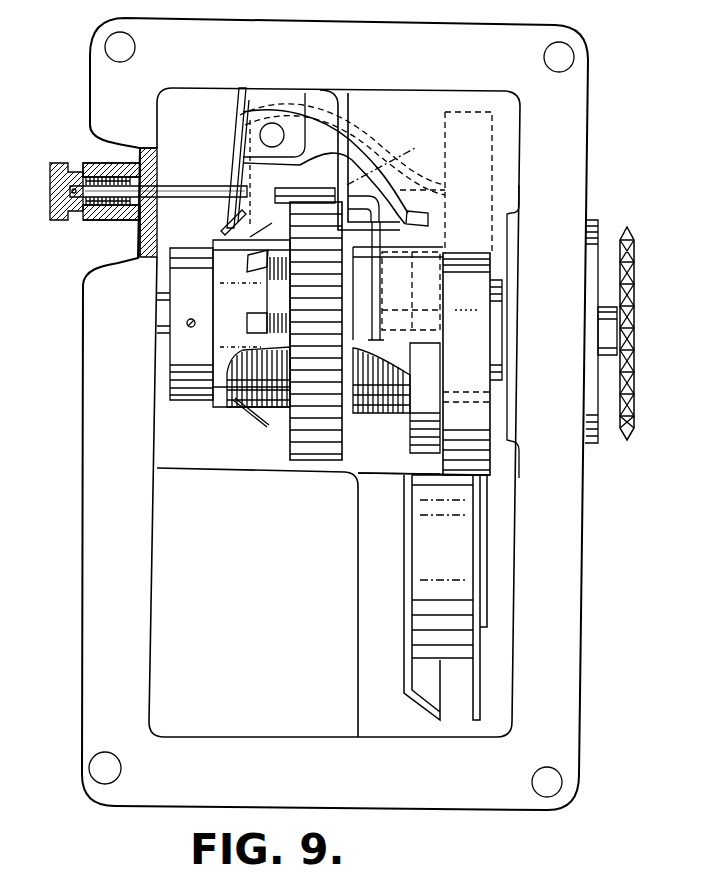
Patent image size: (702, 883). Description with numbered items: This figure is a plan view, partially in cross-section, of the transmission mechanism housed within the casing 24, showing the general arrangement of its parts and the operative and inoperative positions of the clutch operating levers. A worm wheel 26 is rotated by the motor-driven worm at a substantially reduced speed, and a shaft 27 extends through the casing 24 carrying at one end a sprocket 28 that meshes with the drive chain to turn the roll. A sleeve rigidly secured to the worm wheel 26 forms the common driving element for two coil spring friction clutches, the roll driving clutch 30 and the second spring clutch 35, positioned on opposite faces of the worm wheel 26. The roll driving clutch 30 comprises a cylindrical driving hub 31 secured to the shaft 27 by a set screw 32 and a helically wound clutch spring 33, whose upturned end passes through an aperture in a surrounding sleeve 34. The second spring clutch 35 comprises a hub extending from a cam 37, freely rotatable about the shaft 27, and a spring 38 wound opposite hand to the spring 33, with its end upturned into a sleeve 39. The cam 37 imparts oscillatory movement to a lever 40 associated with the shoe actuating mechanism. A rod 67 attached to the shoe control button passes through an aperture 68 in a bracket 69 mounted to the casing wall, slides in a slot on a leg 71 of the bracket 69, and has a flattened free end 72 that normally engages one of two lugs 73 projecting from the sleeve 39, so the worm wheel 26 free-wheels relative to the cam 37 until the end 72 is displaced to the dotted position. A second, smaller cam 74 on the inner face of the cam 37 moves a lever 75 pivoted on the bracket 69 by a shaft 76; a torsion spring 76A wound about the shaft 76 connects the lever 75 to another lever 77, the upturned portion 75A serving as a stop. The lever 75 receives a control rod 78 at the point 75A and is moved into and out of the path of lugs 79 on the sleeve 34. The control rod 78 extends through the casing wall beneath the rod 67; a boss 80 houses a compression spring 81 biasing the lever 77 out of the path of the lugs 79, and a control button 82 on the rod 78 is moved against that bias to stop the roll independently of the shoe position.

The casing 24 is at (582, 524).
The worm wheel 26 is at (292, 428).
The shaft 27 is at (612, 332).
The sprocket 28 is at (629, 287).
The roll driving clutch 30 is at (234, 441).
The cylindrical driving hub 31 is at (184, 256).
The set screw 32 is at (203, 304).
The clutch spring 33 is at (246, 394).
The sleeve 34 is at (220, 384).
The second spring clutch 35 is at (374, 440).
The cam 37 is at (468, 261).
The spring 38 is at (387, 407).
The sleeve 39 is at (438, 323).
The lever 40 is at (408, 505).
The rod 67 is at (303, 192).
The aperture 68 is at (383, 162).
The bracket 69 is at (349, 100).
The leg 71 is at (400, 234).
The free end 72 is at (405, 352).
The lugs 73 is at (380, 323).
The second cam 74 is at (428, 384).
The lever 75 is at (383, 184).
The upturned portion 75A is at (225, 226).
The shaft 76 is at (261, 130).
The torsion spring 76A is at (230, 180).
The lever 77 is at (233, 164).
The control rod 78 is at (167, 192).
The lugs 79 is at (257, 316).
The boss 80 is at (97, 163).
The compression spring 81 is at (92, 220).
The control button 82 is at (50, 187).